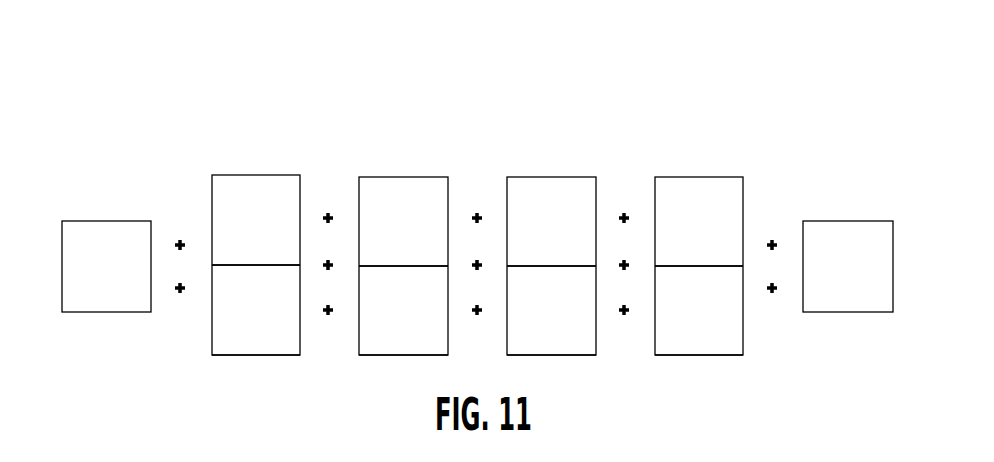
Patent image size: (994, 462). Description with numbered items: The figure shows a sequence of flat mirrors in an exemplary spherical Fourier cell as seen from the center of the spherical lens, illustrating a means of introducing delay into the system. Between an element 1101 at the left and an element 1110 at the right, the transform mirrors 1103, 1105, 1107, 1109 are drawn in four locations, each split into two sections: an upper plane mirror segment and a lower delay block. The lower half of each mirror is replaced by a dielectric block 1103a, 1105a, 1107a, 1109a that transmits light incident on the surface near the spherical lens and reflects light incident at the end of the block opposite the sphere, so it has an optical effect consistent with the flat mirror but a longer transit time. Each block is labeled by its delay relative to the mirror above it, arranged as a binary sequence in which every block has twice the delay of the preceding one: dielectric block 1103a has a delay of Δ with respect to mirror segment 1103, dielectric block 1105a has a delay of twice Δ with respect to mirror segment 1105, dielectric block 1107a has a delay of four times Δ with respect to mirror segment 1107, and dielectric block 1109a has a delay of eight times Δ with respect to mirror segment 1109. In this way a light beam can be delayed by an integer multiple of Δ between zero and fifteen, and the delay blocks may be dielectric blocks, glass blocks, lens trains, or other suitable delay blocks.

The input block 1101 is at (106, 240).
The transform mirror 1103 is at (256, 239).
The dielectric block 1103a is at (250, 335).
The transform mirror 1105 is at (403, 231).
The dielectric block 1105a is at (397, 336).
The transform mirror 1107 is at (549, 231).
The dielectric block 1107a is at (564, 336).
The transform mirror 1109 is at (695, 234).
The dielectric block 1109a is at (701, 338).
The output block 1110 is at (848, 238).